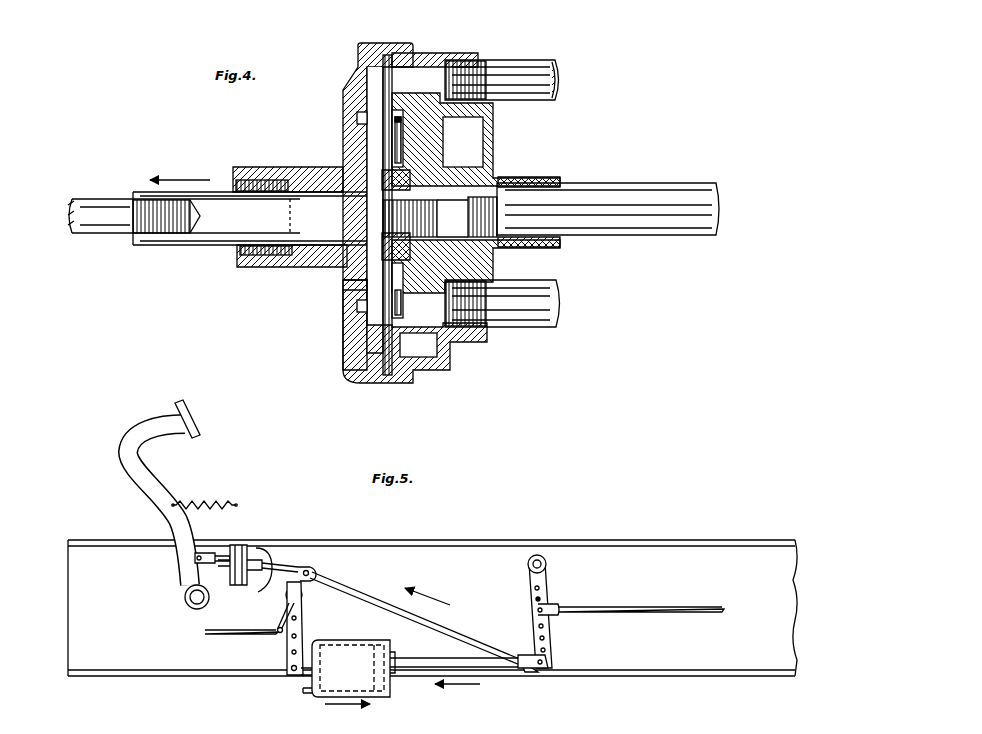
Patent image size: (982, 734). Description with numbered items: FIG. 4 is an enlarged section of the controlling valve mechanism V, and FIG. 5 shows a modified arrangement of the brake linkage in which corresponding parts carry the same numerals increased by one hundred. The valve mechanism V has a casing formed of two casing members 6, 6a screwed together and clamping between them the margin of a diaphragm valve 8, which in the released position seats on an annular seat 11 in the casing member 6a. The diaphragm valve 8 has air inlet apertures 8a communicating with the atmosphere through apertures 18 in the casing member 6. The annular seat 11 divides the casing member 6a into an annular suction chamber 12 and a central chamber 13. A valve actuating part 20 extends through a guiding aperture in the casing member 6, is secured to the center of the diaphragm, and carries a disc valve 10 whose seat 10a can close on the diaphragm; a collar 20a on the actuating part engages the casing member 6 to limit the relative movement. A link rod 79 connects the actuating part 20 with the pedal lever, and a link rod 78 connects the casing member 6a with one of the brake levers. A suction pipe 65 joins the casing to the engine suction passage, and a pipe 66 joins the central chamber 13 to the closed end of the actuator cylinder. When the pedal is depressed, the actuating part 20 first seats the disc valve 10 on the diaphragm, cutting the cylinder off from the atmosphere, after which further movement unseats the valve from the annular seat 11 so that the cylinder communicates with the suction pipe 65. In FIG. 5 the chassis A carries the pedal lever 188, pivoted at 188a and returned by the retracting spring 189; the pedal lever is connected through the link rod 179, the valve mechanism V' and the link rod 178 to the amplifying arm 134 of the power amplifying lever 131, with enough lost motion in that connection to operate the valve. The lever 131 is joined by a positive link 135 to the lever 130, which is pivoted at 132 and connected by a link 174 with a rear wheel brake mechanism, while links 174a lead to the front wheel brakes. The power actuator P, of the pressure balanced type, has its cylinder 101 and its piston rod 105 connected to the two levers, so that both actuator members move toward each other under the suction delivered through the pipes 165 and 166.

In FIG. 4, the casing member 6 is at (350, 70).
In FIG. 4, the casing member 6a is at (440, 55).
In FIG. 4, the diaphragm valve 8 is at (388, 316).
In FIG. 4, the air inlet apertures 8a is at (350, 293).
In FIG. 4, the disc valve 10 is at (405, 140).
In FIG. 4, the seat 10a is at (403, 117).
In FIG. 4, the annular seat 11 is at (392, 100).
In FIG. 4, the annular suction chamber 12 is at (420, 347).
In FIG. 4, the central chamber 13 is at (410, 160).
In FIG. 4, the apertures 18 is at (357, 118).
In FIG. 4, the valve actuating part 20 is at (228, 233).
In FIG. 4, the collar 20a is at (360, 180).
In FIG. 4, the suction pipe 65 is at (560, 82).
In FIG. 4, the pipe 66 is at (562, 304).
In FIG. 4, the link rod 78 is at (630, 190).
In FIG. 4, the link rod 79 is at (97, 200).
In FIG. 5, the cylinder 101 is at (326, 690).
In FIG. 5, the piston rod 105 is at (425, 663).
In FIG. 5, the lever 130 is at (540, 658).
In FIG. 5, the power amplifying lever 131 is at (288, 641).
In FIG. 5, the pivot 132 is at (550, 564).
In FIG. 5, the amplifying arm 134 is at (290, 596).
In FIG. 5, the positive link 135 is at (380, 602).
In FIG. 5, the suction pipe 165 is at (268, 548).
In FIG. 5, the pipe 166 is at (258, 592).
In FIG. 5, the link 174 is at (617, 607).
In FIG. 5, the links 174a is at (218, 636).
In FIG. 5, the link rod 178 is at (282, 566).
In FIG. 5, the link rod 179 is at (212, 556).
In FIG. 5, the pedal lever 188 is at (157, 492).
In FIG. 5, the pivot 188a is at (185, 598).
In FIG. 5, the retracting spring 189 is at (196, 503).
In FIG. 4, the valve mechanism V is at (386, 33).
In FIG. 5, the valve mechanism V' is at (249, 536).
In FIG. 5, the chassis A is at (638, 548).
In FIG. 5, the power actuator P is at (348, 645).